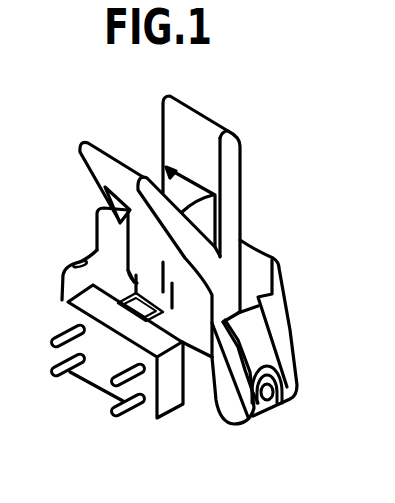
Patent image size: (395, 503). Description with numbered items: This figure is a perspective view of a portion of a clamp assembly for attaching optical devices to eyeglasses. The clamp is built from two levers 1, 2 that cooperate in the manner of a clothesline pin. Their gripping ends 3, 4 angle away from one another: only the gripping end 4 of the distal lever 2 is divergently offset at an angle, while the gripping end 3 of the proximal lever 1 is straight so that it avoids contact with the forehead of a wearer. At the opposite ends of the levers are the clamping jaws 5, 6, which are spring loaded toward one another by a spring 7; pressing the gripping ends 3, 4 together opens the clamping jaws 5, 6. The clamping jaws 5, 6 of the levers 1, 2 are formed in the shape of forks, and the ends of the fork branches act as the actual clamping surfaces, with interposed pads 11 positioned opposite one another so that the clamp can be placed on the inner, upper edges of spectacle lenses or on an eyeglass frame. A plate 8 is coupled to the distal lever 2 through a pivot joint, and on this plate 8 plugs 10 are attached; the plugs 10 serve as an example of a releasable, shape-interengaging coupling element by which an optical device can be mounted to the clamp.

The proximal lever 1 is at (244, 236).
The distal lever 2 is at (213, 268).
The gripping end 3 is at (228, 158).
The gripping end 4 is at (158, 207).
The clamping jaw 5 is at (296, 385).
The clamping jaw 6 is at (242, 403).
The spring 7 is at (146, 242).
The plate 8 is at (103, 367).
The plugs 10 is at (118, 410).
The pads 11 is at (276, 403).